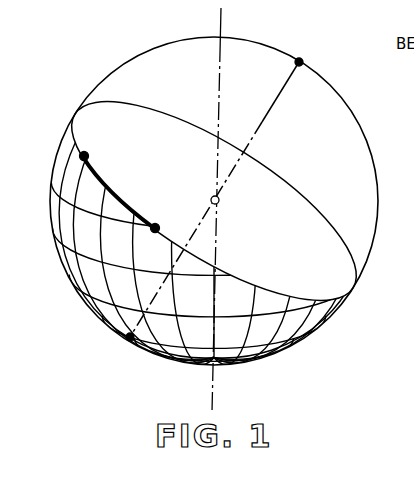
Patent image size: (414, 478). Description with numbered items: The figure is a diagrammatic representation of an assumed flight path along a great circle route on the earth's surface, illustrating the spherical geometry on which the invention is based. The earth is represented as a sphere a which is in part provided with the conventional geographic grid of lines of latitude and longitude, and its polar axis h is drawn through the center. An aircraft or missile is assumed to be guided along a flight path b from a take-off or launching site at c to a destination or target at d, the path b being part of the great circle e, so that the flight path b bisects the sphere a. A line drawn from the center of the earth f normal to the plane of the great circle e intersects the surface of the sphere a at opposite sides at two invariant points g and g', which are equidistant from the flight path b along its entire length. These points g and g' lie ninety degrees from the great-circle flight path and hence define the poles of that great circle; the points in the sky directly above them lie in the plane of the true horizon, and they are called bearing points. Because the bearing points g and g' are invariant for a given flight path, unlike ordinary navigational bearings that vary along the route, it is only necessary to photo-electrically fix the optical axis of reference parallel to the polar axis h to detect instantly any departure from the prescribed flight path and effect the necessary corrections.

The sphere a is at (70, 279).
The flight path b is at (125, 200).
The take-off or launching site c is at (158, 225).
The destination or target d is at (87, 153).
The great circle e is at (289, 182).
The center of the earth f is at (219, 204).
The bearing point g is at (242, 188).
The bearing point g' is at (112, 348).
The polar axis h is at (222, 26).